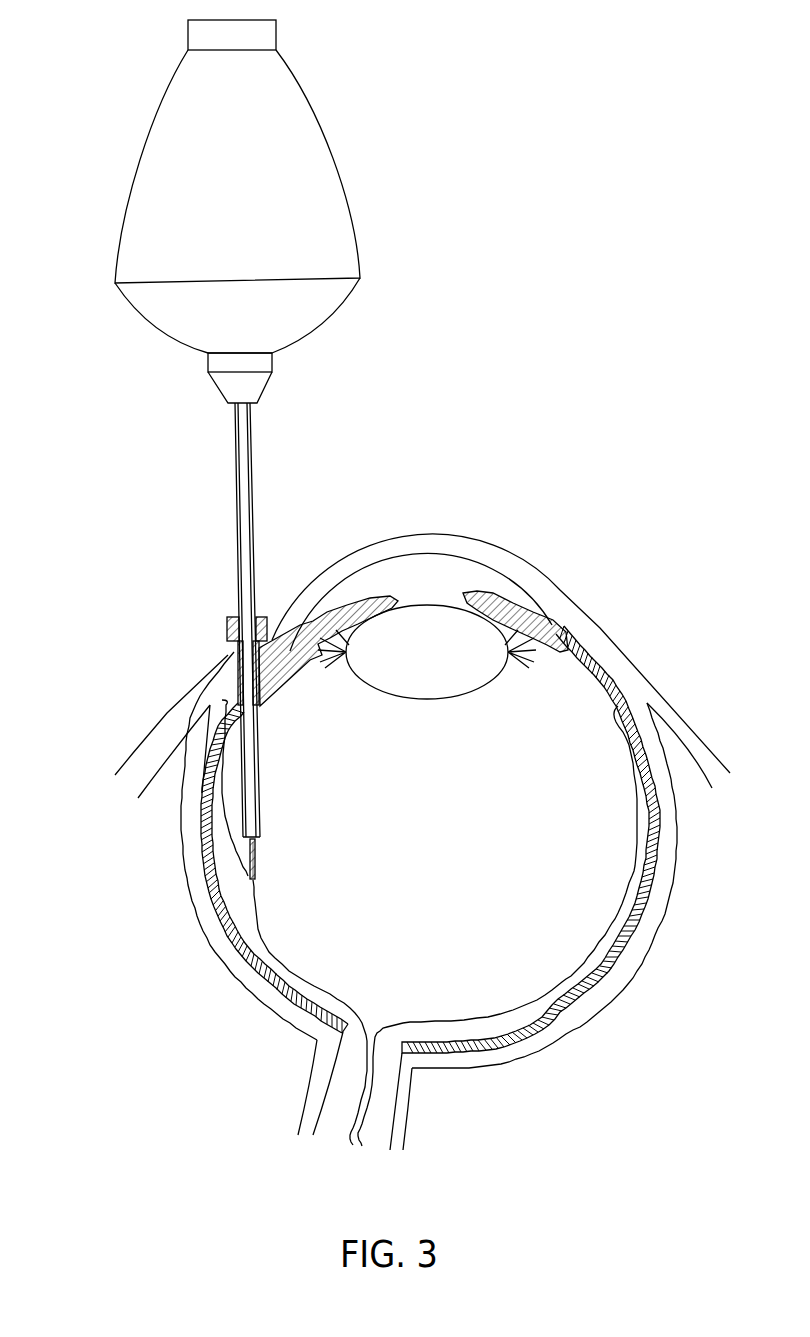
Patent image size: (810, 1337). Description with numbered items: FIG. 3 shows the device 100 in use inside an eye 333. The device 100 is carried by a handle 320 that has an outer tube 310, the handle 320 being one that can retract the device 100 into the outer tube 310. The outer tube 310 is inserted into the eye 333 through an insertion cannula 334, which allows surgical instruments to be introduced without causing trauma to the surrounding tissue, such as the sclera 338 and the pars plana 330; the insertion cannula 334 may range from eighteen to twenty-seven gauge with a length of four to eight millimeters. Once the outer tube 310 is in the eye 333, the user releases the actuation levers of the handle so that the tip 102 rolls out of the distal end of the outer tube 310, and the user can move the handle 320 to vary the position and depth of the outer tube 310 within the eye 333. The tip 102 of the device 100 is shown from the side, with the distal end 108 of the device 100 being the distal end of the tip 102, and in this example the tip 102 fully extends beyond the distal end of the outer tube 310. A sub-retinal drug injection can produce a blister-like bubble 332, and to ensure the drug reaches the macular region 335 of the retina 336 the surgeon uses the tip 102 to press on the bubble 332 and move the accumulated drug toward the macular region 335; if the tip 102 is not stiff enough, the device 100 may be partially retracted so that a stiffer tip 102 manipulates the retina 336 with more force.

The handle 320 is at (131, 75).
The outer tube 310 is at (259, 755).
The insertion cannula 334 is at (227, 638).
The device 100 is at (270, 840).
The tip 102 is at (256, 856).
The distal end 108 is at (256, 882).
The eye 333 is at (606, 1054).
The pars plana 330 is at (612, 677).
The sclera 338 is at (592, 630).
The retina 336 is at (643, 843).
The macular region 335 is at (272, 975).
The bubble 332 is at (247, 873).